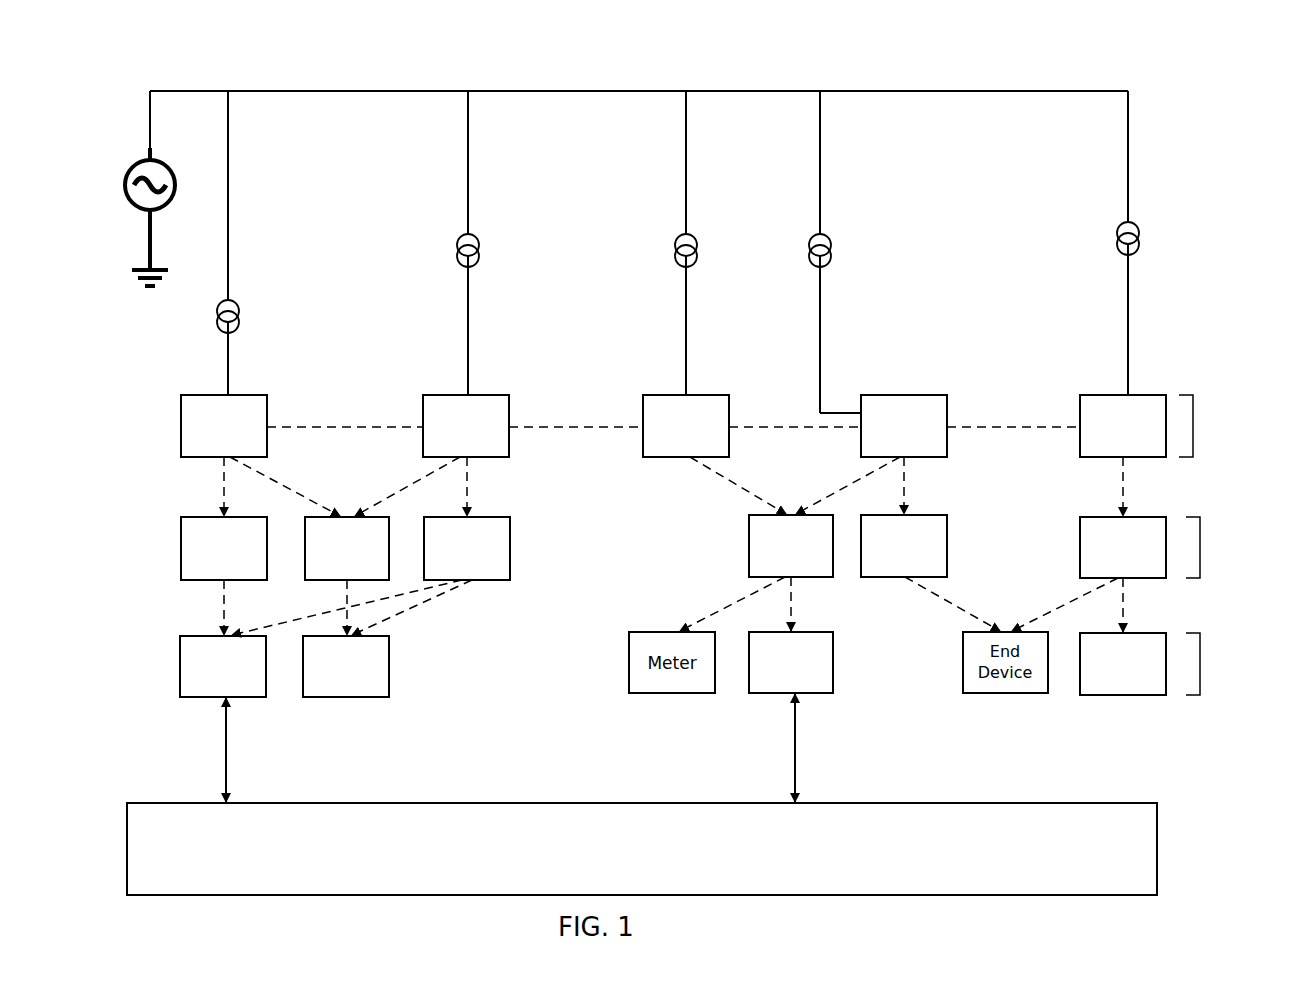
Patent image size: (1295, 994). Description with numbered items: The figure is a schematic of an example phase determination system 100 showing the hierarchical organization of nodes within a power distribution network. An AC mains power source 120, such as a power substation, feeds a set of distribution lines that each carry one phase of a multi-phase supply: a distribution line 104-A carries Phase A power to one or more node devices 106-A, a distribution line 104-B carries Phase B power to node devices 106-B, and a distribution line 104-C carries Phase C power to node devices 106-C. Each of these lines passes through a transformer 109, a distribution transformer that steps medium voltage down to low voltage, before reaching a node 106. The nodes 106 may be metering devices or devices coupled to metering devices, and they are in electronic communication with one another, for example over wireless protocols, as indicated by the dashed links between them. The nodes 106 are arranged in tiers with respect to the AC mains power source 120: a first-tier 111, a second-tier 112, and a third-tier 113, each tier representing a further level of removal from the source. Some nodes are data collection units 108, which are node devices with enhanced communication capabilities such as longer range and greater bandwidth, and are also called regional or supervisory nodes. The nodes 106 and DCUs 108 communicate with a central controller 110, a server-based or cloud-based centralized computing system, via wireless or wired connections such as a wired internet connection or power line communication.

The phase determination system 100 is at (710, 66).
The distribution line 104-A is at (229, 140).
The distribution line 104-B is at (469, 140).
The distribution line 104-C is at (687, 160).
The node 106 is at (511, 549).
The node device 106-A is at (180, 430).
The node device 106-B is at (422, 430).
The node device 106-C is at (642, 450).
The data collection unit 108 is at (390, 666).
The transformer 109 is at (237, 303).
The central controller 110 is at (126, 851).
The first-tier 111 is at (1193, 431).
The second-tier 112 is at (1200, 553).
The third-tier 113 is at (1200, 669).
The AC mains power source 120 is at (132, 206).